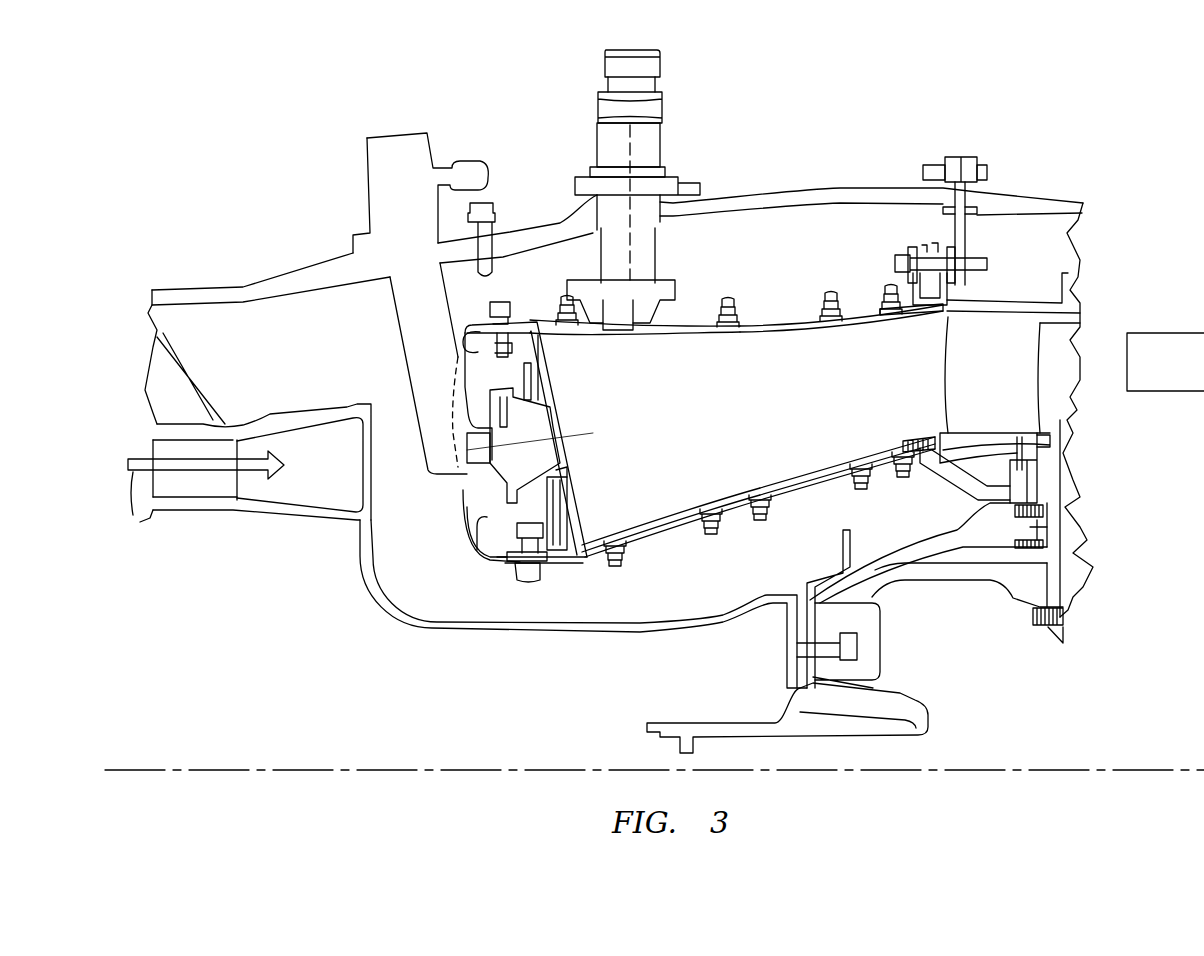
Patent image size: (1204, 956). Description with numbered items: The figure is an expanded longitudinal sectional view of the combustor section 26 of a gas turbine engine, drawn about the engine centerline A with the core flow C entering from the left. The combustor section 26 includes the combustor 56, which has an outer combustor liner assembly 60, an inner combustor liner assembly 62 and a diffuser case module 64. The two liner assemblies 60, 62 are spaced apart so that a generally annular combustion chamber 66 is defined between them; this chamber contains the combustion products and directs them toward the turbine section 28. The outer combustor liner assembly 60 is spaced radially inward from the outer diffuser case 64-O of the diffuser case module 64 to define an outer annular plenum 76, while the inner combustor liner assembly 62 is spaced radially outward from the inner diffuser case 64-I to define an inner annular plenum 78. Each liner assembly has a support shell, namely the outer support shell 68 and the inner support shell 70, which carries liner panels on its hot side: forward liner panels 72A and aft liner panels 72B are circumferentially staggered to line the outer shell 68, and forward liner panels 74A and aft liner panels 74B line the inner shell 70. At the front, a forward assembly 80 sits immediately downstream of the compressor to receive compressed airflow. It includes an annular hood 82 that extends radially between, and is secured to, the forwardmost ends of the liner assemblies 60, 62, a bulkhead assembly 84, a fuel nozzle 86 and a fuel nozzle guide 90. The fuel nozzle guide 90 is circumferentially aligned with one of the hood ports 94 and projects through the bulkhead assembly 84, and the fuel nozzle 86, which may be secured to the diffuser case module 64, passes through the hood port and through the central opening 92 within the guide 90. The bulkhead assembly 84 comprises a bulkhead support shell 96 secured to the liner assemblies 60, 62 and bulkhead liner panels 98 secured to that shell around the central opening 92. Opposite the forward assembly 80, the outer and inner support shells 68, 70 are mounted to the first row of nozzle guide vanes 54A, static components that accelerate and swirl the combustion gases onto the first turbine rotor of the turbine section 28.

The combustor section 26 is at (880, 98).
The turbine section 28 is at (1186, 377).
The nozzle guide vanes 54A is at (1017, 389).
The combustor 56 is at (900, 238).
The outer combustor liner assembly 60 is at (736, 313).
The inner combustor liner assembly 62 is at (827, 487).
The diffuser case module 64 is at (765, 355).
The outer diffuser case 64-O is at (773, 187).
The inner diffuser case 64-I is at (640, 637).
The combustion chamber 66 is at (750, 419).
The outer support shell 68 is at (853, 307).
The inner support shell 70 is at (758, 474).
The forward liner panels 72A is at (658, 333).
The aft liner panels 72B is at (822, 322).
The forward liner panels 74A is at (657, 513).
The aft liner panels 74B is at (840, 460).
The outer annular plenum 76 is at (725, 256).
The inner annular plenum 78 is at (705, 607).
The forward assembly 80 is at (504, 480).
The annular hood 82 is at (473, 530).
The bulkhead assembly 84 is at (555, 380).
The fuel nozzle 86 is at (427, 259).
The fuel nozzle guide 90 is at (563, 408).
The central opening 92 is at (563, 468).
The hood ports 94 is at (480, 497).
The bulkhead support shell 96 is at (522, 520).
The bulkhead liner panels 98 is at (573, 498).
The engine central axis A is at (1110, 768).
The core flow C is at (205, 499).